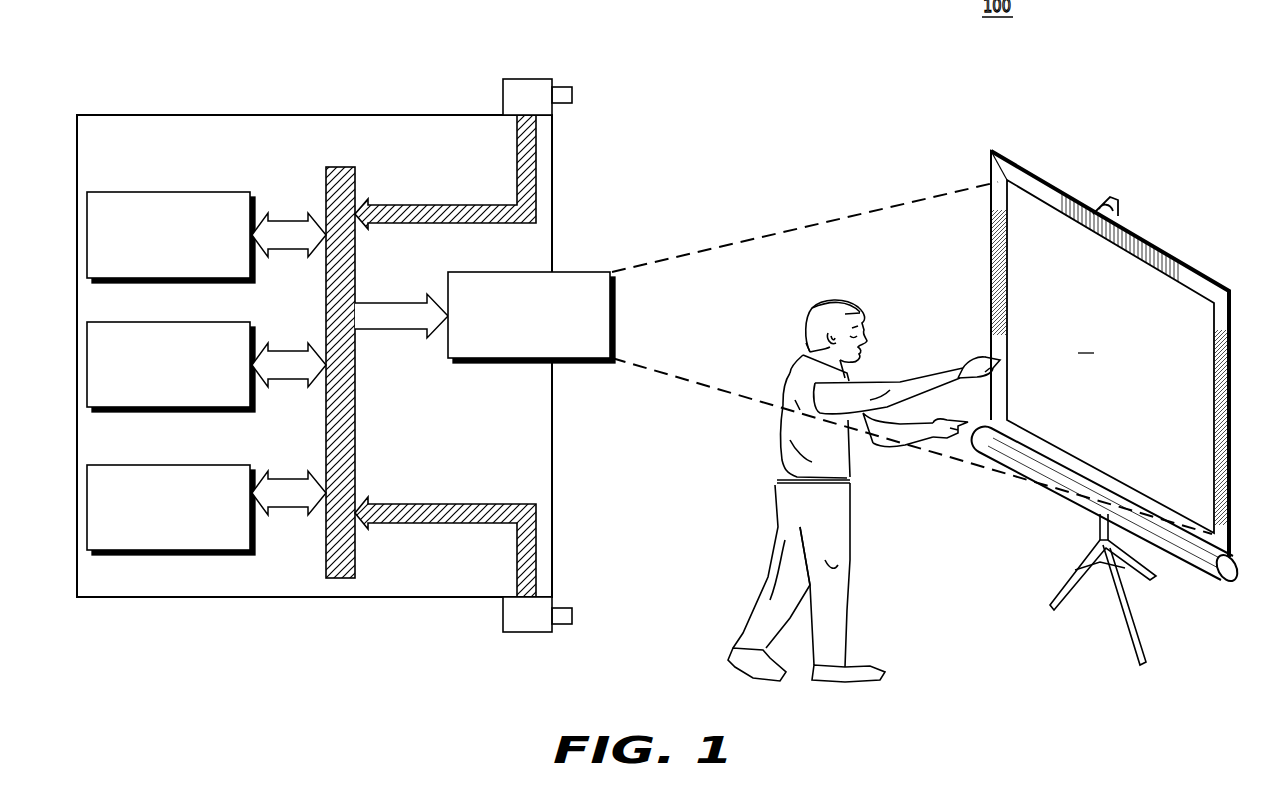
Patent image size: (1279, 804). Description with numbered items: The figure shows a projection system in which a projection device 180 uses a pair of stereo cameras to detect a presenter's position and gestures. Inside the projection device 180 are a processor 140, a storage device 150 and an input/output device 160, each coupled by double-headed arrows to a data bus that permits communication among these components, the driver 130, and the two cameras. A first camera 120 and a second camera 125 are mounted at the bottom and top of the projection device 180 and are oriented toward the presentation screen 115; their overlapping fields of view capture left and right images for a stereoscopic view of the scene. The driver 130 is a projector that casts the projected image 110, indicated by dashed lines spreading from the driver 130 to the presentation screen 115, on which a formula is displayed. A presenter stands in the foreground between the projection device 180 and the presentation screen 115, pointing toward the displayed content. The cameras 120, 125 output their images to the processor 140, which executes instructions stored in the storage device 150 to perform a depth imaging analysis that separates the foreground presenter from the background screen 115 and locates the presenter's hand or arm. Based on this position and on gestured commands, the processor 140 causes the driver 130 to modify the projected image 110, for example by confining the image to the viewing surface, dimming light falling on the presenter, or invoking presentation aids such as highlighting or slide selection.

The projected image 110 is at (784, 232).
The presentation screen 115 is at (1013, 162).
The first camera 120 is at (528, 632).
The second camera 125 is at (528, 79).
The projector driver 130 is at (478, 272).
The processor 140 is at (168, 190).
The storage device 150 is at (168, 321).
The input/output device 160 is at (168, 464).
The projection device 180 is at (315, 113).